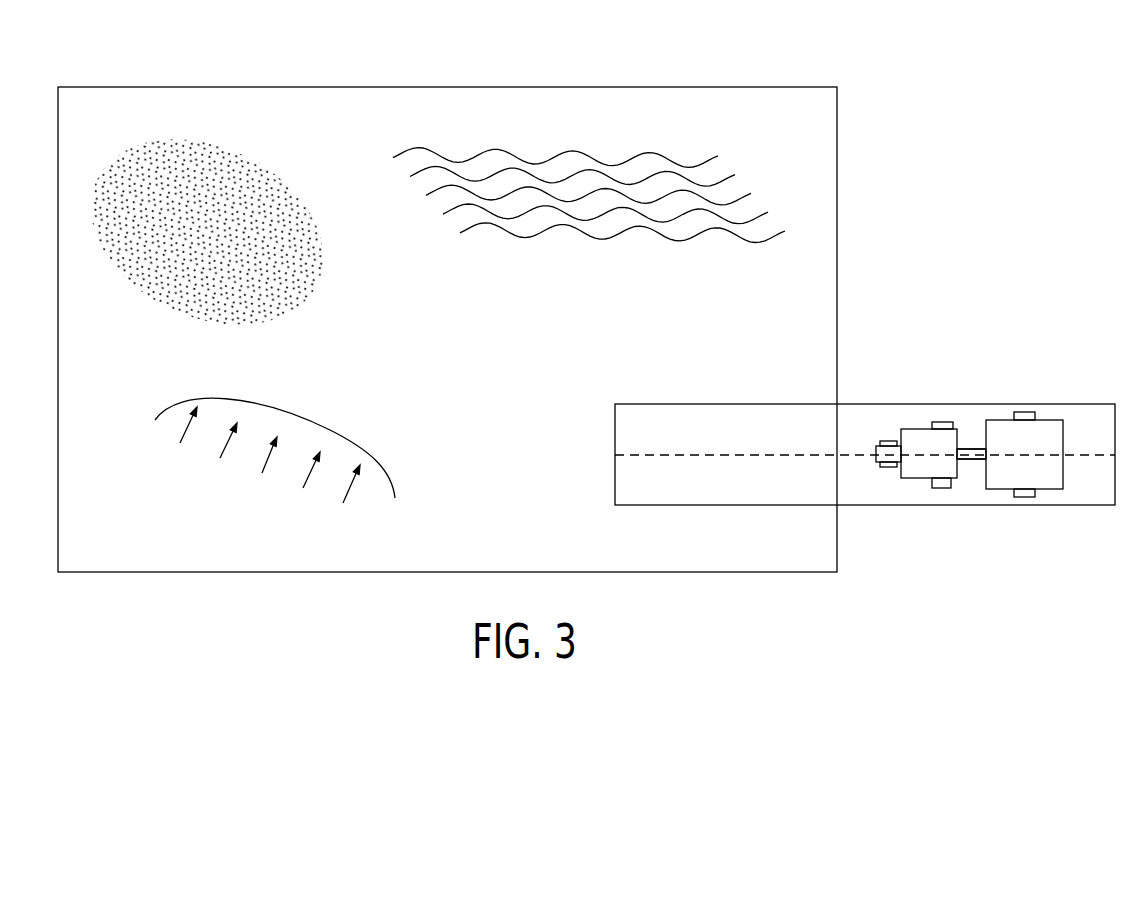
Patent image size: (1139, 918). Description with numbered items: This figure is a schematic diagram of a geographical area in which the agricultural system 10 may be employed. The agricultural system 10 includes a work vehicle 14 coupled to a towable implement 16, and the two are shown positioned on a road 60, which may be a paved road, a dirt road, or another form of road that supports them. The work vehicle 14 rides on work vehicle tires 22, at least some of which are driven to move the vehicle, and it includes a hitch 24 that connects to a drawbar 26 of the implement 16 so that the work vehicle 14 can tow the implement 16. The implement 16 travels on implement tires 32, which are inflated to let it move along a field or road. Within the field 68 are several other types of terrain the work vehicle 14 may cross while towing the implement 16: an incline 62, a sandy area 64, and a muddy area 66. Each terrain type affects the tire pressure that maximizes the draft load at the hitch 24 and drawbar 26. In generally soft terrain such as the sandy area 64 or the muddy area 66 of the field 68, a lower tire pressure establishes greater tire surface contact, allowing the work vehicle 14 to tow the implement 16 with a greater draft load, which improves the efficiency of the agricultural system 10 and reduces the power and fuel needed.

The agricultural system 10 is at (990, 360).
The work vehicle 14 is at (923, 428).
The implement 16 is at (1058, 420).
The work vehicle tires 22 is at (889, 441).
The hitch 24 is at (965, 466).
The drawbar 26 is at (977, 466).
The implement tires 32 is at (1024, 412).
The road 60 is at (853, 404).
The incline 62 is at (325, 413).
The sandy area 64 is at (220, 140).
The muddy area 66 is at (625, 137).
The field 68 is at (838, 148).